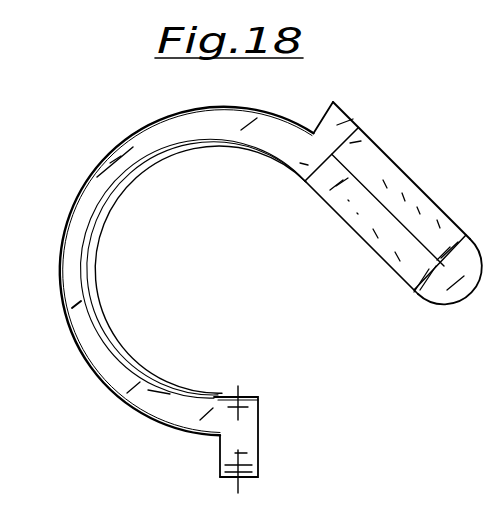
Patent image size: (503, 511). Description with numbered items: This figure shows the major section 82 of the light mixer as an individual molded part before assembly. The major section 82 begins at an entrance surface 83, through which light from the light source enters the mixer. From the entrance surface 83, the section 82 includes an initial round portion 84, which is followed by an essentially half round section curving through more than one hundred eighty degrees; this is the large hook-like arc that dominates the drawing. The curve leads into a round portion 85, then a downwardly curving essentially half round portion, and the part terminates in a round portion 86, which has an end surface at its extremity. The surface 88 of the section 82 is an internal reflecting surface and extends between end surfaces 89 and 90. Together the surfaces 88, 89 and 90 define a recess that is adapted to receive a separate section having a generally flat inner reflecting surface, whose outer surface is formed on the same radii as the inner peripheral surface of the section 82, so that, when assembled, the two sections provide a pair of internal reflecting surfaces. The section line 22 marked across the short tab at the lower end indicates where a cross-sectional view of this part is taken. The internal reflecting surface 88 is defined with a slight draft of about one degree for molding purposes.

The major section 82 is at (98, 300).
The entrance surface 83 is at (263, 424).
The initial round portion 84 is at (242, 440).
The round portion 85 is at (339, 120).
The round portion 86 is at (407, 285).
The internal reflecting surface 88 is at (72, 209).
The end surface 89 is at (221, 452).
The end surface 90 is at (323, 118).
The section line 22- 22 is at (313, 387).